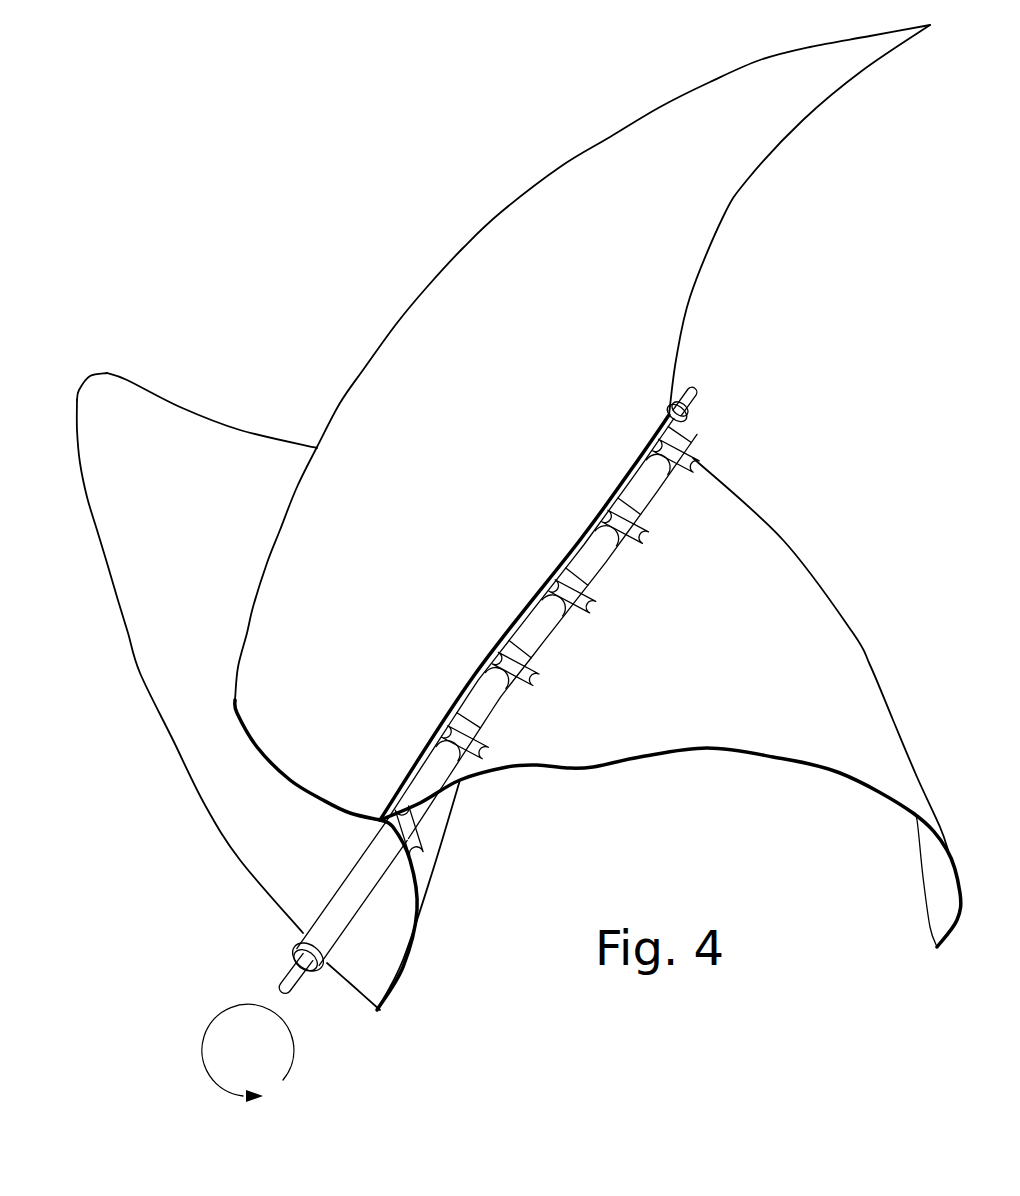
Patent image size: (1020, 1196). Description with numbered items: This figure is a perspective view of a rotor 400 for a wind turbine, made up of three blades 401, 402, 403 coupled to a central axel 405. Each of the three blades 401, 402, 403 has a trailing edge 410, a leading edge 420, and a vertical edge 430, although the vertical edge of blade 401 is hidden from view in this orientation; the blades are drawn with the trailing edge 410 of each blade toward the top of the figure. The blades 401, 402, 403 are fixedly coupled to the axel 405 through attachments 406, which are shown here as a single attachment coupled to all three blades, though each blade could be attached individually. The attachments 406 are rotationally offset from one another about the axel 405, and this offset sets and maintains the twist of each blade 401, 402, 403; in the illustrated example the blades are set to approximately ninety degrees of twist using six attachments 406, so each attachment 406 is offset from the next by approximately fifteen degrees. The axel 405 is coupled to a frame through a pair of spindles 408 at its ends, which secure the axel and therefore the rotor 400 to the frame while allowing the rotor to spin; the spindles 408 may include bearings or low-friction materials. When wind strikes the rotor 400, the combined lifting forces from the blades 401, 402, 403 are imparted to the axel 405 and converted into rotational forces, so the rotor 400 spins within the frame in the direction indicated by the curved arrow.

The rotor 400 is at (366, 148).
The blade 401 is at (202, 548).
The blade 402 is at (489, 422).
The blade 403 is at (738, 652).
The axel 405 is at (372, 898).
The attachments 406 is at (548, 668).
The spindles 408 is at (690, 424).
The trailing edge 410 is at (723, 217).
The leading edge 420 is at (498, 213).
The vertical edge 430 is at (580, 538).